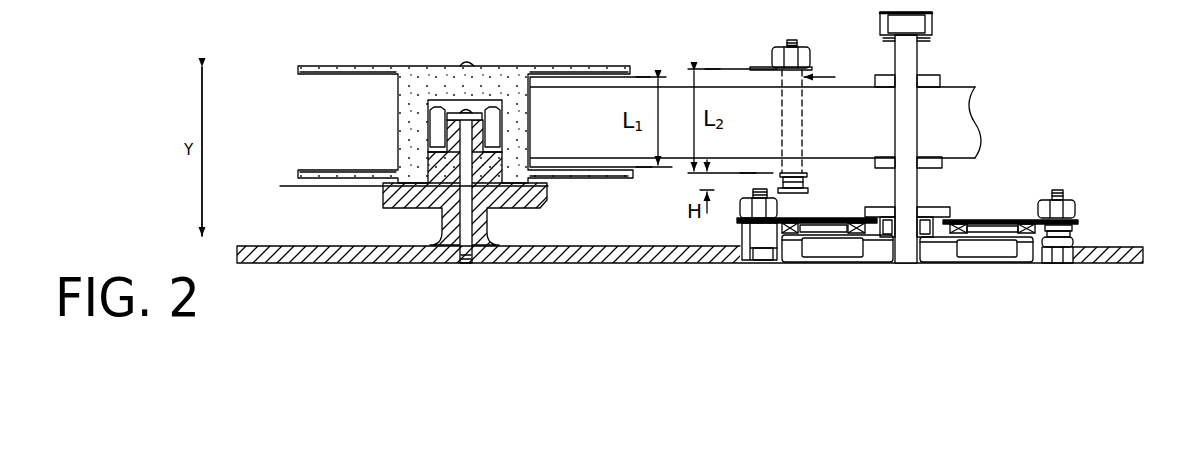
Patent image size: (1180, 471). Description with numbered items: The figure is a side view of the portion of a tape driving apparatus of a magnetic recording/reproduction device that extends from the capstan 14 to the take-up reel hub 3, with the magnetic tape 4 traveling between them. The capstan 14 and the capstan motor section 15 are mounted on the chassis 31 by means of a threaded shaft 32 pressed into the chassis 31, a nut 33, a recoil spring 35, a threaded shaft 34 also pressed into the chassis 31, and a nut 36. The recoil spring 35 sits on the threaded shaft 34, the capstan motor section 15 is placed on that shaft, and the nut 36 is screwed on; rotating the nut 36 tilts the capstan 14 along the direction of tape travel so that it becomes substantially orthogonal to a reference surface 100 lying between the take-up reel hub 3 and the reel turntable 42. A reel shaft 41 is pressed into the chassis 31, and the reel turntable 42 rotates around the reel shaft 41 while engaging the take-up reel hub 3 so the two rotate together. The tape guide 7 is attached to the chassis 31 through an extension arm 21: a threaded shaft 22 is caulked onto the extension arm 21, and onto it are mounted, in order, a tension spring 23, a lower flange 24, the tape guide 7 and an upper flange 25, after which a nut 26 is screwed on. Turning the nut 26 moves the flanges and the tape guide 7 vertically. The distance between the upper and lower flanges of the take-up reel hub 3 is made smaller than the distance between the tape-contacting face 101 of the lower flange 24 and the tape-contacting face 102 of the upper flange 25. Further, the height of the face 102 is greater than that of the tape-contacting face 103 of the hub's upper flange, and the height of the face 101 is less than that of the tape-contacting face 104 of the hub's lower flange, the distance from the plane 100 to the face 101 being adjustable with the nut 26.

The take-up reel hub 3 is at (525, 65).
The magnetic tape 4 is at (960, 125).
The tape guide 7 is at (831, 77).
The capstan 14 is at (907, 60).
The capstan motor section 15 is at (973, 257).
The extension arm 21 is at (802, 202).
The threaded shaft 22 is at (792, 40).
The tension spring 23 is at (805, 186).
The lower flange 24 is at (808, 177).
The upper flange 25 is at (770, 68).
The nut 26 is at (812, 55).
The chassis 31 is at (300, 257).
The threaded shaft 32 is at (750, 232).
The nut 33 is at (740, 213).
The threaded shaft 34 is at (1072, 240).
The recoil spring 35 is at (1070, 226).
The nut 36 is at (1065, 198).
The reel shaft 41 is at (467, 252).
The reel turntable 42 is at (525, 204).
The reference surface 100 is at (293, 190).
The tape-contacting face of the lower flange 101 is at (747, 173).
The tape-contacting face of the upper flange 102 is at (712, 67).
The tape-contacting face of the upper flange of the take-up reel hub 103 is at (643, 72).
The tape-contacting face of the lower flange of the take-up reel hub 104 is at (645, 170).